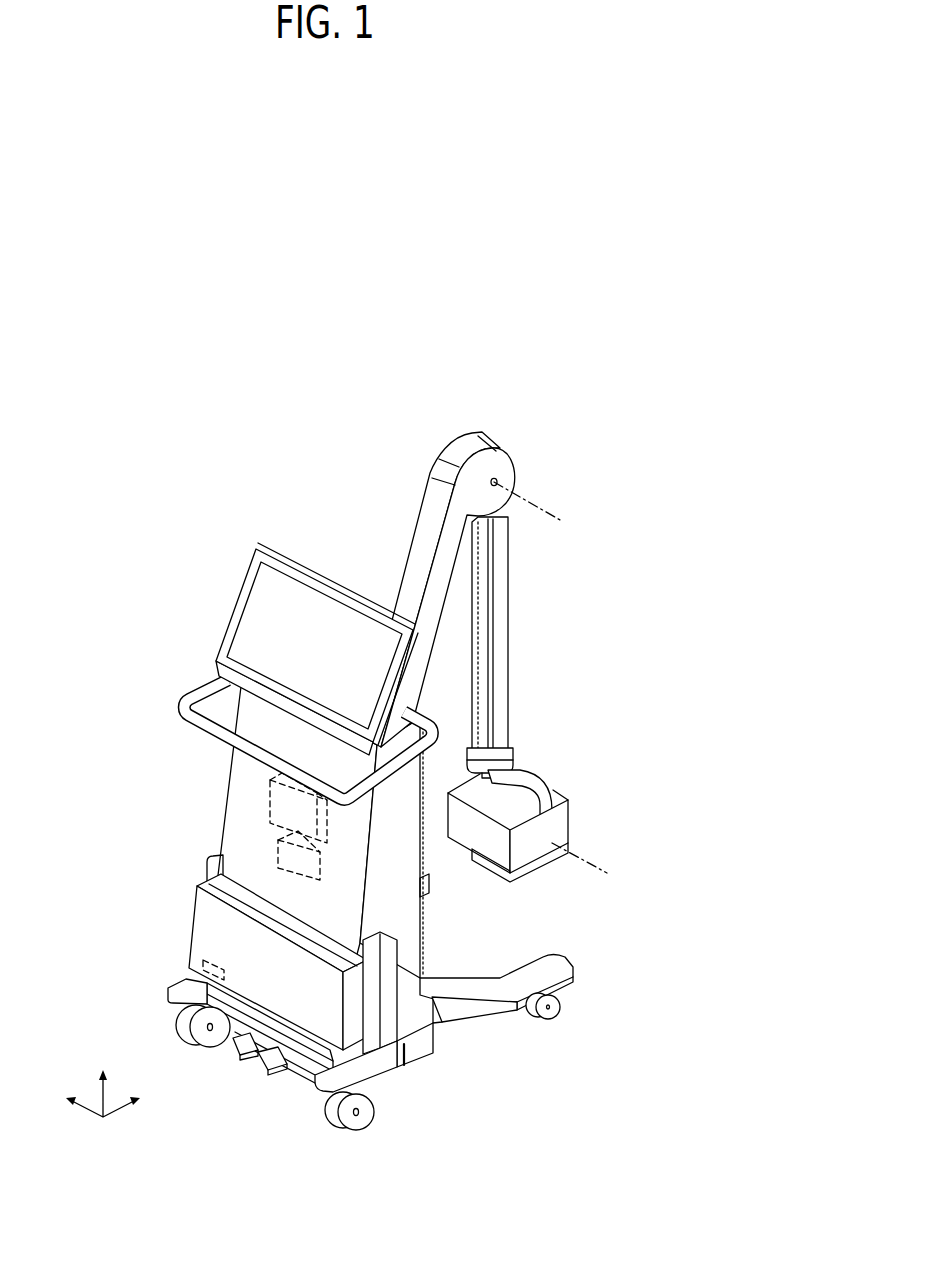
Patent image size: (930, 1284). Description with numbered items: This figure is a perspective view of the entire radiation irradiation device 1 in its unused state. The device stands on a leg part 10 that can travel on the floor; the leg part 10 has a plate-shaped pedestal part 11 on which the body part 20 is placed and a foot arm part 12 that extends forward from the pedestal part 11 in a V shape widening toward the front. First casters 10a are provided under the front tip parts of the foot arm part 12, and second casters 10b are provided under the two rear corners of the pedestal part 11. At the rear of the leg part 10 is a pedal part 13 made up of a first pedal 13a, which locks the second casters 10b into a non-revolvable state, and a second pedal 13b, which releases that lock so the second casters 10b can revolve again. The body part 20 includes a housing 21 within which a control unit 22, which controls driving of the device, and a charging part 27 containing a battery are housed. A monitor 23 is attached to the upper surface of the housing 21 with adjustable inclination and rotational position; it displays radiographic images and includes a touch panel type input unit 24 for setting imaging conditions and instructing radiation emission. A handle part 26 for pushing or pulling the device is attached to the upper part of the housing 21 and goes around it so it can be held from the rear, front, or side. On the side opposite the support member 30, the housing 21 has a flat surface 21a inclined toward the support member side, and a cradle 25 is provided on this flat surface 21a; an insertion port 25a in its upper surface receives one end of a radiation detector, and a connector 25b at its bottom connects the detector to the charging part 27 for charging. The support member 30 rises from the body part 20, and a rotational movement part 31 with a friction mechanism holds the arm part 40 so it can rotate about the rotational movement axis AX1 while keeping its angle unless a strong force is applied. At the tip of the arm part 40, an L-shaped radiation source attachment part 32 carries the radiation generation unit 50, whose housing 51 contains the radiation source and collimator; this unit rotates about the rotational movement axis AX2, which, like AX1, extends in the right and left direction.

The radiation irradiation device 1 is at (341, 380).
The leg part 10 is at (333, 1058).
The first casters 10a is at (548, 1017).
The second casters 10b is at (177, 1022).
The pedestal part 11 is at (415, 1053).
The foot arm part 12 is at (472, 985).
The pedal part 13 is at (245, 1088).
The first pedal 13a is at (287, 1057).
The second pedal 13b is at (232, 1042).
The body part 20 is at (292, 810).
The housing 21 is at (292, 810).
The flat surface 21a is at (240, 827).
The control unit 22 is at (267, 778).
The monitor 23 is at (303, 622).
The touch panel type input unit 24 is at (263, 577).
The cradle 25 is at (240, 947).
The insertion port 25a is at (220, 888).
The connector 25b is at (200, 915).
The handle part 26 is at (192, 690).
The charging part 27 is at (327, 843).
The support member 30 is at (465, 585).
The rotational movement part 31 is at (498, 460).
The radiation source attachment part 32 is at (523, 773).
The arm part 40 is at (502, 547).
The radiation generation unit 50 is at (544, 820).
The housing 51 is at (568, 810).
The rotational movement axis AX1 is at (542, 488).
The rotational movement axis AX2 is at (600, 868).